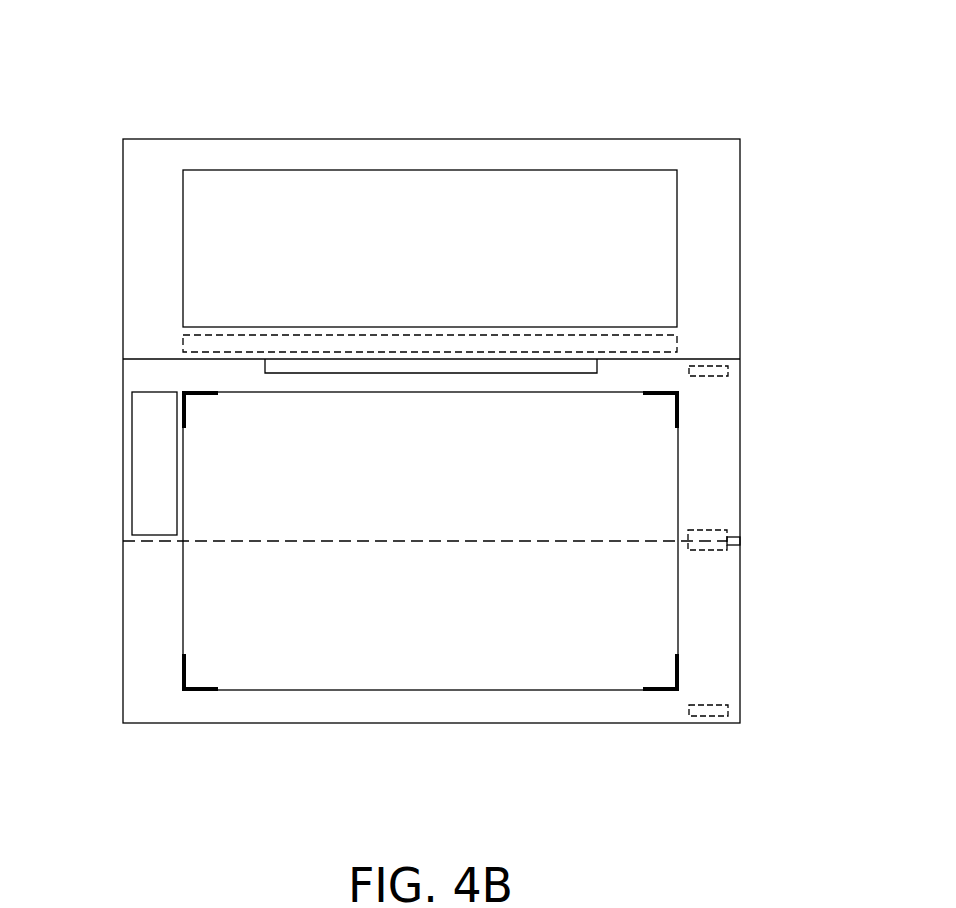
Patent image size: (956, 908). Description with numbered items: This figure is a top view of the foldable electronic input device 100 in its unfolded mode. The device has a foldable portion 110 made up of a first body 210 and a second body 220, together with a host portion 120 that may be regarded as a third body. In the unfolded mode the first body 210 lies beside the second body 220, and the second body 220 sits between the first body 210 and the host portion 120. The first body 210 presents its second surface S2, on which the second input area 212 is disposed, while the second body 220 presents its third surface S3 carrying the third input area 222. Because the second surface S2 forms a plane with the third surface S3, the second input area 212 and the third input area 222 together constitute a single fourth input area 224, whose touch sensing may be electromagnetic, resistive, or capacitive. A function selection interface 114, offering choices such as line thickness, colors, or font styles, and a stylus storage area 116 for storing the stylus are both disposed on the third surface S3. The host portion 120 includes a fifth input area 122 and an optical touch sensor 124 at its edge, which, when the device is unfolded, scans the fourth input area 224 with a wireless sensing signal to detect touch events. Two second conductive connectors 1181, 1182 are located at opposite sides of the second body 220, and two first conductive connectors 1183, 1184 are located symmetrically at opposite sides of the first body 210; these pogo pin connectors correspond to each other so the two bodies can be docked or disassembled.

The foldable electronic input device 100 is at (713, 117).
The foldable portion 110 is at (741, 467).
The function selection interface 114 is at (132, 438).
The stylus storage area 116 is at (265, 365).
The second conductive connector 1181 is at (728, 370).
The second conductive connector 1182 is at (735, 535).
The first conductive connector 1183 is at (735, 547).
The first conductive connector 1184 is at (728, 710).
The host portion 120 is at (741, 254).
The fifth input area 122 is at (183, 255).
The optical touch sensor 124 is at (183, 348).
The first body 210 is at (143, 633).
The second input area 212 is at (430, 646).
The second body 220 is at (130, 490).
The third input area 222 is at (430, 439).
The fourth input area 224 is at (107, 6).
The second surface S2 is at (709, 649).
The third surface S3 is at (709, 444).